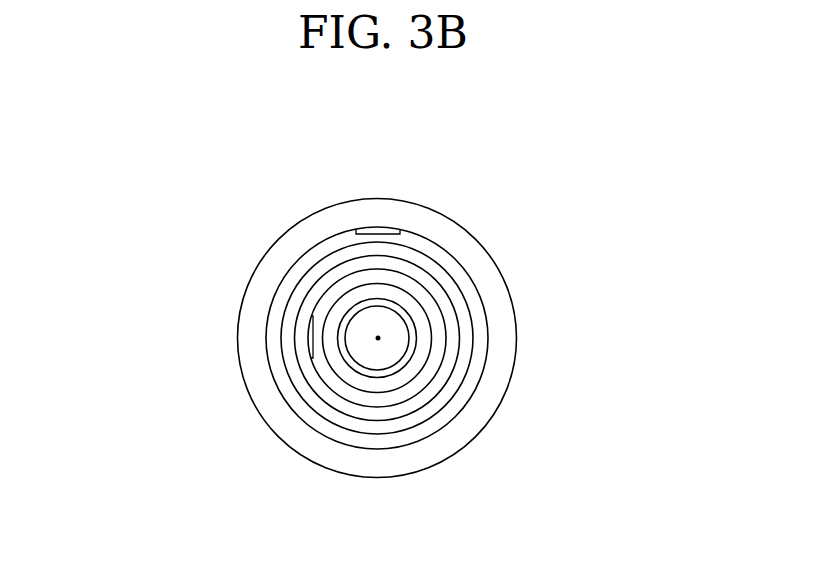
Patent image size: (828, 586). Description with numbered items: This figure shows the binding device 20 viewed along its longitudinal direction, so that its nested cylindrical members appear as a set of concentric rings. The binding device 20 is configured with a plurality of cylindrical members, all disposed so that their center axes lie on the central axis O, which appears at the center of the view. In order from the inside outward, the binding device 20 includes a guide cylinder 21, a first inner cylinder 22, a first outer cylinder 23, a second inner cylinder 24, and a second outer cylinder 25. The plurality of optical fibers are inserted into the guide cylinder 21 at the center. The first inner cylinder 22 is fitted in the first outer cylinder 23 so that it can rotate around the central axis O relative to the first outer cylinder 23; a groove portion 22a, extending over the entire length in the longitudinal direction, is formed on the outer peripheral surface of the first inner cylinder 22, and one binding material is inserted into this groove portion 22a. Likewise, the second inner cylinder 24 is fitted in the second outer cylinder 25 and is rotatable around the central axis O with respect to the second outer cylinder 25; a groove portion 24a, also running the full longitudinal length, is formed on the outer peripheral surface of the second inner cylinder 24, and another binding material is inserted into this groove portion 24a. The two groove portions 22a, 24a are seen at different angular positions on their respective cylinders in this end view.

The binding device 20 is at (466, 193).
The guide cylinder 21 is at (407, 312).
The first inner cylinder 22 is at (440, 315).
The groove portion 22a is at (312, 328).
The first outer cylinder 23 is at (455, 333).
The second inner cylinder 24 is at (480, 362).
The groove portion 24a is at (362, 228).
The second outer cylinder 25 is at (490, 405).
The central axis O is at (378, 338).